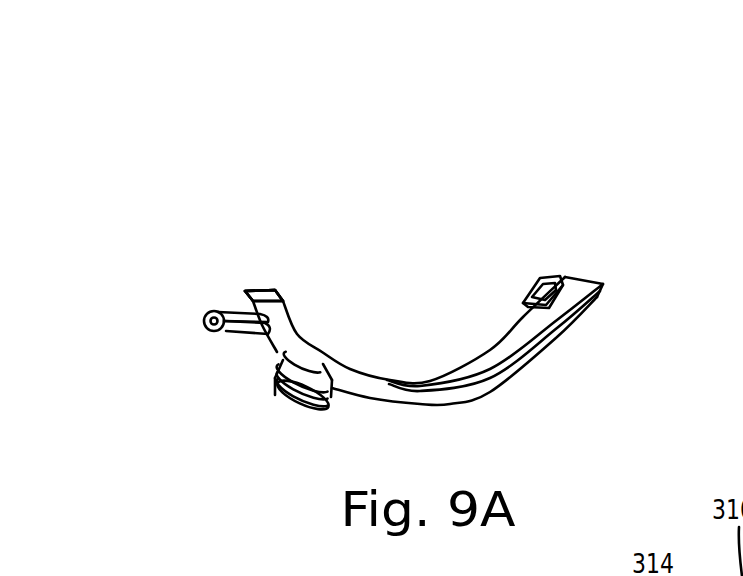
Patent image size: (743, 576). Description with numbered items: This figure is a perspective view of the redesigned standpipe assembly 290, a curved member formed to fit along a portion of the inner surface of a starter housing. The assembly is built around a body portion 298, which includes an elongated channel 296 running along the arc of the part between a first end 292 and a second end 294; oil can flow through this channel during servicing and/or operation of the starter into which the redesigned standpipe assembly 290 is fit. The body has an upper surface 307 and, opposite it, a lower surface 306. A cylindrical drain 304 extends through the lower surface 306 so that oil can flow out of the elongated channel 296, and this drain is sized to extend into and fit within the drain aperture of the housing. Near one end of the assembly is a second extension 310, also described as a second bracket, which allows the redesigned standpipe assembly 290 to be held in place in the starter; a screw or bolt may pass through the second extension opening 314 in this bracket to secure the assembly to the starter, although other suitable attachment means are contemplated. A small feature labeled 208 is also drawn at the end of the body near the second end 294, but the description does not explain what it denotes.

The redesigned standpipe assembly 290 is at (543, 150).
The first end 292 is at (608, 306).
The second end 294 is at (269, 290).
The elongated channel 296 is at (600, 270).
The body portion 298 is at (481, 372).
The cylindrical drain 304 is at (322, 400).
The lower surface 306 is at (435, 412).
The upper surface 307 is at (440, 376).
The second extension 310 is at (249, 344).
The second extension opening 314 is at (211, 313).
The latch 208 is at (561, 272).